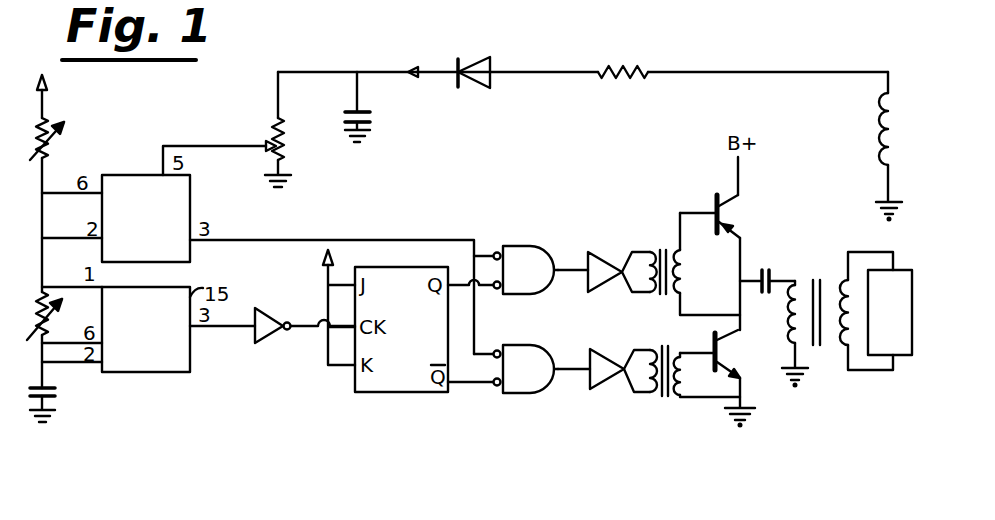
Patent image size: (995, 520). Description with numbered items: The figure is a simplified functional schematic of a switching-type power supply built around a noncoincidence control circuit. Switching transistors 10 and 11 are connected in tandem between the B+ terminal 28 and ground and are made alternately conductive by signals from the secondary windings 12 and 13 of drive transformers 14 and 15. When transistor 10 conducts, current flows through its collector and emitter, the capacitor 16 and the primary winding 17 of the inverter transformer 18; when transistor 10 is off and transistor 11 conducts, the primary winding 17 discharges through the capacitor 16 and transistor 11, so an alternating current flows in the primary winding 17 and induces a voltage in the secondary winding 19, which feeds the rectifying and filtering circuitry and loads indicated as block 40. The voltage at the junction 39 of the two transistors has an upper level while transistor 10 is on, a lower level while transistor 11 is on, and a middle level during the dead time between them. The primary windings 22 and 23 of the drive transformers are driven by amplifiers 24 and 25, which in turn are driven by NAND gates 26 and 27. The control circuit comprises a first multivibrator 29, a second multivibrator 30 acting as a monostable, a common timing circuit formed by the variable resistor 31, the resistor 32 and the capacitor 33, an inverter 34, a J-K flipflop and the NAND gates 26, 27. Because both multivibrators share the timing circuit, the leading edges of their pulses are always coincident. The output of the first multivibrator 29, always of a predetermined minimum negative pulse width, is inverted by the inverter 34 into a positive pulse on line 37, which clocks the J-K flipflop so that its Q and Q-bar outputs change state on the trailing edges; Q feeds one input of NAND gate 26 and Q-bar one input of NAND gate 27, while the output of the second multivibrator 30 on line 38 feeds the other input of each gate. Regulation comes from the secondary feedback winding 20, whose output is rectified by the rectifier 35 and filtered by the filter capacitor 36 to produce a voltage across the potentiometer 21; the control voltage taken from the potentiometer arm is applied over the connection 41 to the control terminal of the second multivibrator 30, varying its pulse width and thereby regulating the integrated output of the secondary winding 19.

The switching transistor 10 is at (722, 219).
The switching transistor 11 is at (720, 356).
The secondary winding 12 is at (682, 256).
The secondary winding 13 is at (682, 386).
The drive transformer 14 is at (661, 250).
The drive transformer 15 is at (668, 348).
The capacitor 16 is at (773, 272).
The primary winding 17 is at (785, 329).
The inverter transformer 18 is at (811, 277).
The secondary winding 19 is at (879, 372).
The secondary feedback winding 20 is at (892, 131).
The potentiometer 21 is at (284, 150).
The primary winding 22 is at (646, 296).
The primary winding 23 is at (650, 396).
The amplifier 24 is at (596, 250).
The amplifier 25 is at (597, 392).
The NAND gate 26 is at (524, 233).
The NAND gate 27 is at (530, 393).
The B+ terminal 28 is at (740, 172).
The first multivibrator 29 is at (140, 372).
The second multivibrator 30 is at (118, 175).
The variable resistor 31 is at (56, 146).
The resistor 32 is at (60, 311).
The capacitor 33 is at (57, 395).
The inverter 34 is at (262, 346).
The rectifier 35 is at (491, 80).
The filter capacitor 36 is at (372, 118).
The output line 37 is at (312, 323).
The output line 38 is at (405, 240).
The junction 39 is at (739, 283).
The rectifying and filtering circuitry and loads 40 is at (902, 307).
The control voltage line 41 is at (190, 146).